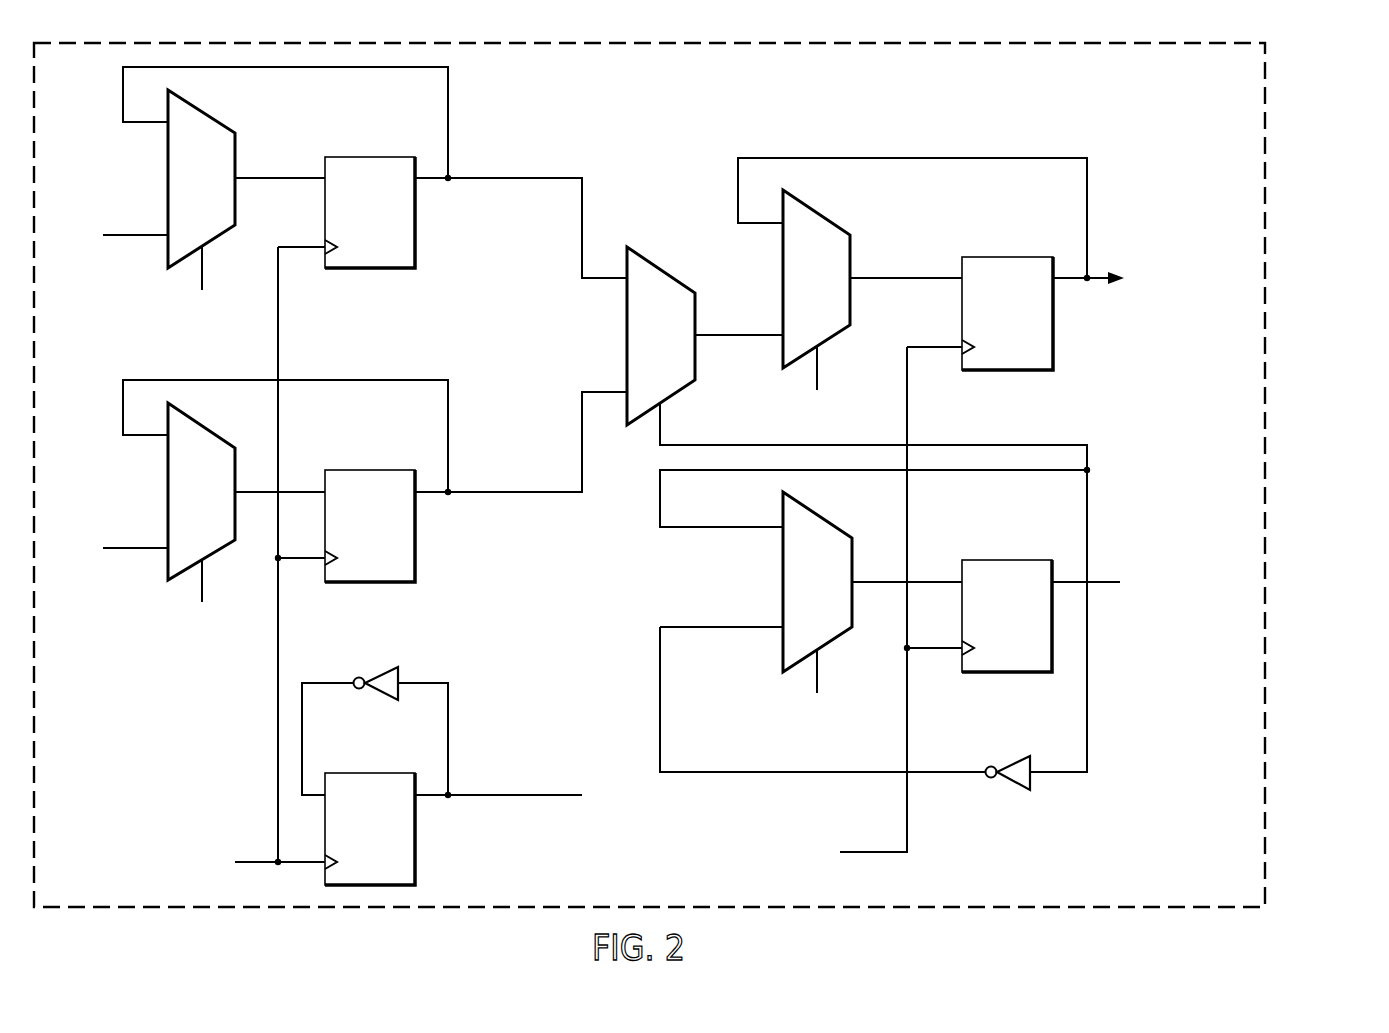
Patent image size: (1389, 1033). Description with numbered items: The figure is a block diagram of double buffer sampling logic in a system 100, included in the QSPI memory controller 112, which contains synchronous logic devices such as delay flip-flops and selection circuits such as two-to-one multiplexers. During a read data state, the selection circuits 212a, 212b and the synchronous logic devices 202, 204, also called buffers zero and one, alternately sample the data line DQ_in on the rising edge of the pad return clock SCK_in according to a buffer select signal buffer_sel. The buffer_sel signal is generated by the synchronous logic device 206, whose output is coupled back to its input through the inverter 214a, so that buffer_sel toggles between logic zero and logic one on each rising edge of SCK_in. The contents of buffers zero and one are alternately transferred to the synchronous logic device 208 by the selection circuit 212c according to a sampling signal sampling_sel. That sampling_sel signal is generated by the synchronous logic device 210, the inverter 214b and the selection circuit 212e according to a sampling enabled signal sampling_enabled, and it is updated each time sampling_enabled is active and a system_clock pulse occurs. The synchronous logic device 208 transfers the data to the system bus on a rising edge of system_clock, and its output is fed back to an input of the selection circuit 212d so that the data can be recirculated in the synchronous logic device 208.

The memory system 100 is at (1295, 355).
The QSPI memory controller 112 is at (649, 475).
The synchronous logic device 202 is at (370, 157).
The synchronous logic device 204 is at (370, 582).
The synchronous logic device 206 is at (415, 828).
The synchronous logic device 208 is at (1007, 257).
The synchronous logic device 210 is at (1007, 560).
The selection circuit 212a is at (168, 167).
The selection circuit 212b is at (168, 483).
The selection circuit 212c is at (627, 323).
The selection circuit 212d is at (783, 268).
The selection circuit 212e is at (783, 595).
The inverter 214a is at (363, 702).
The inverter 214b is at (1003, 790).